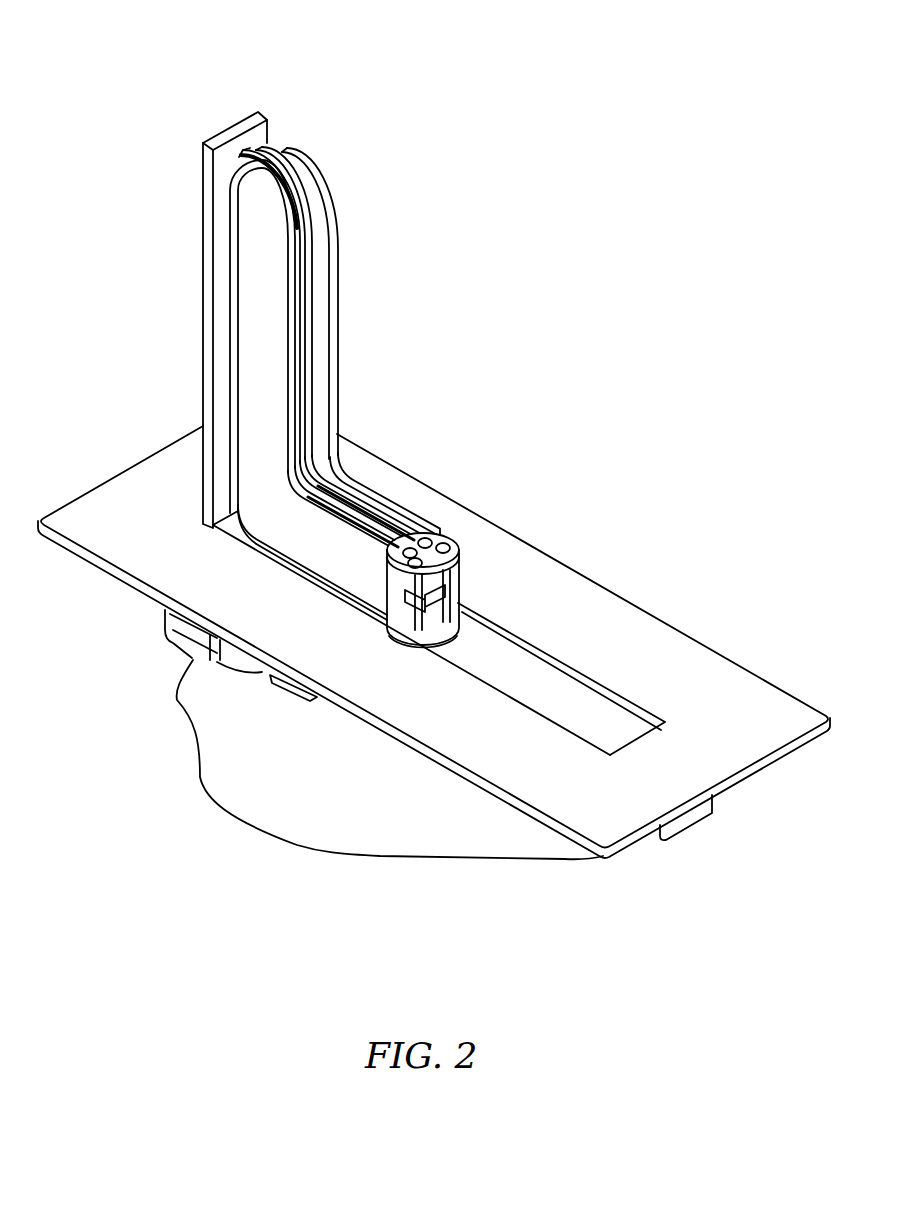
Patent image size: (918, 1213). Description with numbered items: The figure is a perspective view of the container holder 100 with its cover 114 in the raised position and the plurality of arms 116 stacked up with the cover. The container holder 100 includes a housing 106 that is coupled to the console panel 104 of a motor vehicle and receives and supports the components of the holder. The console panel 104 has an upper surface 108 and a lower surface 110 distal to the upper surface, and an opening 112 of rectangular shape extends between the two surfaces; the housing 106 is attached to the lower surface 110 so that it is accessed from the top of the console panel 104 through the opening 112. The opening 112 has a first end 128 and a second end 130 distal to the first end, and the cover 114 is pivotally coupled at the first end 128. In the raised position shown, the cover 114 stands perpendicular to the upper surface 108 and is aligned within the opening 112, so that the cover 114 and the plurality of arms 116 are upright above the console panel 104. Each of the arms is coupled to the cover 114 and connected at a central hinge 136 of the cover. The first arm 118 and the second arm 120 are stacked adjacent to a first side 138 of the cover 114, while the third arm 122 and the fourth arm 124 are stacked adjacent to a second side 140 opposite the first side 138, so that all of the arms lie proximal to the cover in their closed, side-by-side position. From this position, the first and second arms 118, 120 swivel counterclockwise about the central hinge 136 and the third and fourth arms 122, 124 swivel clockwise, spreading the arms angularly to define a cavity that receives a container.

The container holder 100 is at (438, 72).
The console panel 104 is at (539, 548).
The housing 106 is at (340, 854).
The upper surface 108 is at (760, 696).
The lower surface 110 is at (767, 781).
The opening 112 is at (645, 727).
The cover 114 is at (240, 100).
The plurality of arms 116 is at (350, 186).
The first arm 118 is at (237, 167).
The second arm 120 is at (283, 230).
The third arm 122 is at (338, 240).
The fourth arm 124 is at (275, 149).
The first end 128 is at (207, 532).
The second end 130 is at (628, 750).
The central hinge 136 is at (456, 540).
The first side 138 is at (237, 153).
The second side 140 is at (254, 145).